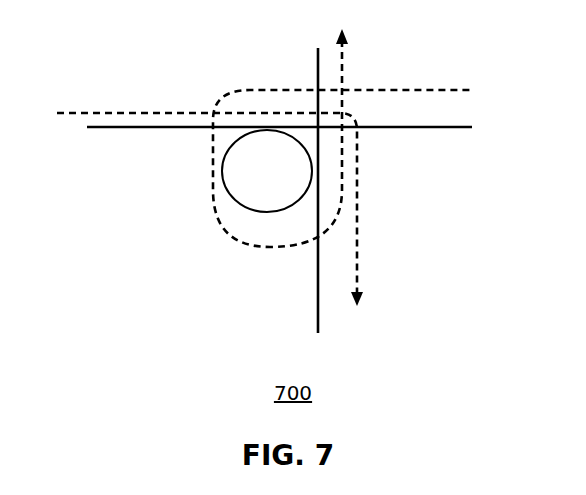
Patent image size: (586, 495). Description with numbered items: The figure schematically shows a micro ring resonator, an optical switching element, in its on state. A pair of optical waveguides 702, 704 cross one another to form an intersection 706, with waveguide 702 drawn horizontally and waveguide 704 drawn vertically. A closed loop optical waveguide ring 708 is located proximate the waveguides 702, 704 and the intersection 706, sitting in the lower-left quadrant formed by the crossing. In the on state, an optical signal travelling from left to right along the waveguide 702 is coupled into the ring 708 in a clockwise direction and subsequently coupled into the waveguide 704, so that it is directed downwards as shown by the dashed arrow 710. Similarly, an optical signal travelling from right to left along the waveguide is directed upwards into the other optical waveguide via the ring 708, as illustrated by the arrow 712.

The optical waveguide 702 is at (428, 130).
The optical waveguide 704 is at (318, 306).
The intersection 706 is at (317, 127).
The closed loop optical waveguide ring 708 is at (233, 203).
The dashed arrow 710 is at (123, 112).
The arrow 712 is at (445, 90).